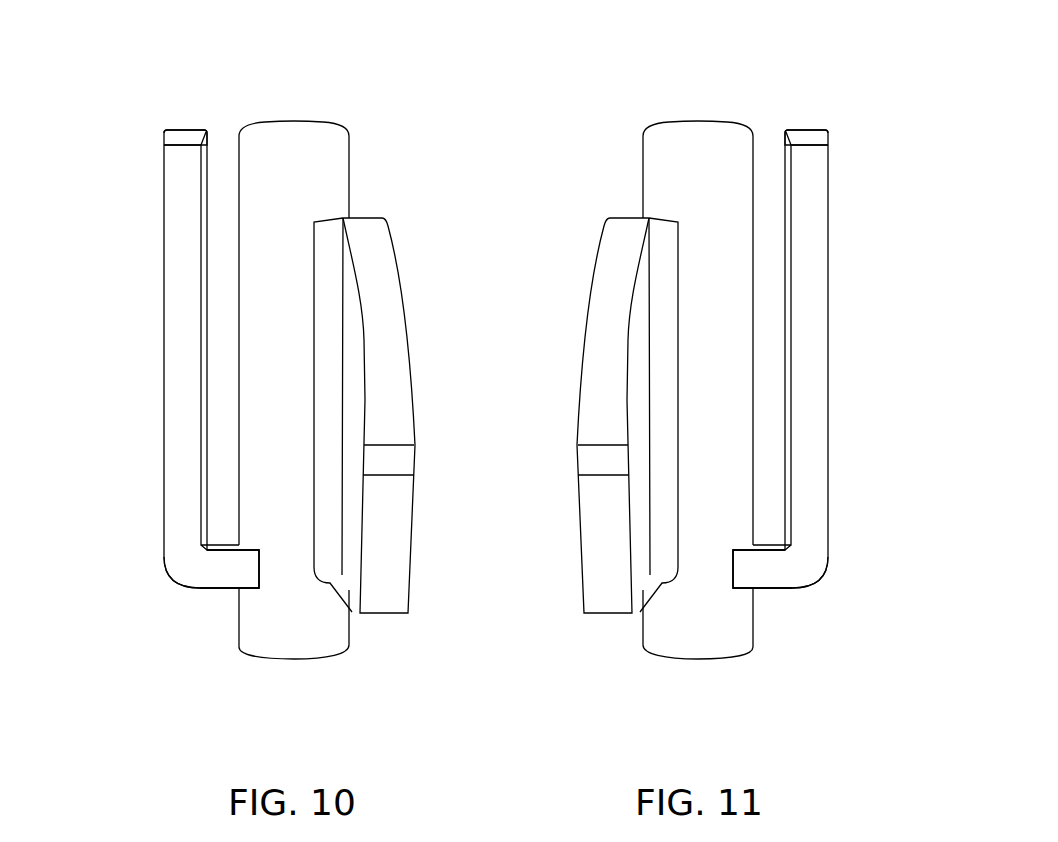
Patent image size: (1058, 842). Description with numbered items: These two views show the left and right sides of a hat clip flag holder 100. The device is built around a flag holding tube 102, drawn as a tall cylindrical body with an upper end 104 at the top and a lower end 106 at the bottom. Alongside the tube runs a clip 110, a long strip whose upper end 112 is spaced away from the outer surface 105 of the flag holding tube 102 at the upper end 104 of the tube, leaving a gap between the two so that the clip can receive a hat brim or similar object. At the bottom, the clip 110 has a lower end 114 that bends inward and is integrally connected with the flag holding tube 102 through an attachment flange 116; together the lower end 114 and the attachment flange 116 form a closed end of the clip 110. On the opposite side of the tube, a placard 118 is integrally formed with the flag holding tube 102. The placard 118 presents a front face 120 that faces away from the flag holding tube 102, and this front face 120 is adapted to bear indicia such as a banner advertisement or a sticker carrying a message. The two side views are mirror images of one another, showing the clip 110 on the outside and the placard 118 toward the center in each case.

In FIG. 10, the hat clip flag holder 100 is at (330, 88).
In FIG. 11, the hat clip flag holder 100 is at (652, 88).
In FIG. 10, the flag holding tube 102 is at (294, 656).
In FIG. 11, the flag holding tube 102 is at (698, 656).
In FIG. 10, the upper end 104 is at (362, 155).
In FIG. 11, the upper end 104 is at (636, 155).
In FIG. 10, the outer surface 105 is at (236, 172).
In FIG. 10, the lower end 106 is at (367, 637).
In FIG. 11, the lower end 106 is at (630, 637).
In FIG. 10, the clip 110 is at (190, 322).
In FIG. 11, the clip 110 is at (805, 326).
In FIG. 10, the upper end 112 is at (157, 143).
In FIG. 11, the upper end 112 is at (860, 142).
In FIG. 10, the lower end 114 is at (160, 565).
In FIG. 11, the lower end 114 is at (853, 566).
In FIG. 10, the attachment flange 116 is at (212, 567).
In FIG. 11, the attachment flange 116 is at (785, 573).
In FIG. 10, the placard 118 is at (380, 325).
In FIG. 11, the placard 118 is at (612, 325).
In FIG. 10, the front face 120 is at (414, 510).
In FIG. 11, the front face 120 is at (582, 510).